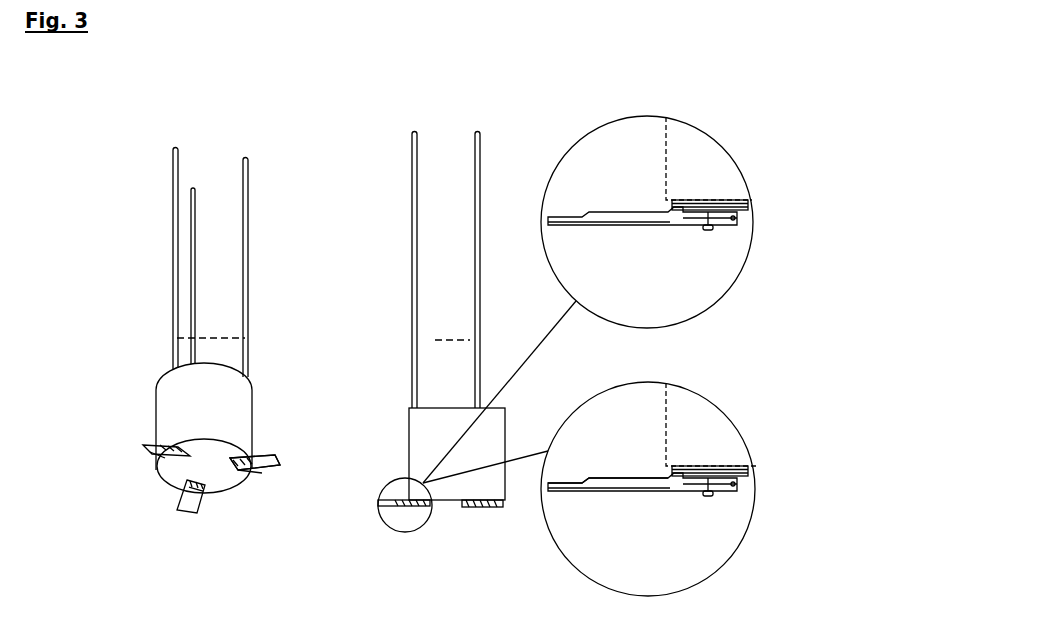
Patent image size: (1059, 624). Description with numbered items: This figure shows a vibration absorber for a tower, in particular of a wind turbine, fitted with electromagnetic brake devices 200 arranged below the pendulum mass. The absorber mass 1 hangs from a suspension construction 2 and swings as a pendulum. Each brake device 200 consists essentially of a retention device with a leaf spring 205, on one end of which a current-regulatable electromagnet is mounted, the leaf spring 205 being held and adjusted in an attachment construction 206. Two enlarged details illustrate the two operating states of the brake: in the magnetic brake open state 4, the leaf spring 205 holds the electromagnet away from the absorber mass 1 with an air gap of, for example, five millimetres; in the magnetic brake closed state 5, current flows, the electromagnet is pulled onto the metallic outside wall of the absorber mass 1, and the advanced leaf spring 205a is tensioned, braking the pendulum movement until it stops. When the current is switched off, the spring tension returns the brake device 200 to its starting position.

The absorber mass 1 is at (233, 415).
The suspension construction 2 is at (247, 357).
The magnetic brake open 4 is at (702, 200).
The magnetic brake closed 5 is at (692, 466).
The brake device 200 is at (165, 460).
The leaf spring 205 is at (630, 493).
The advanced leaf spring 205a is at (633, 226).
The attachment construction 206 is at (280, 460).